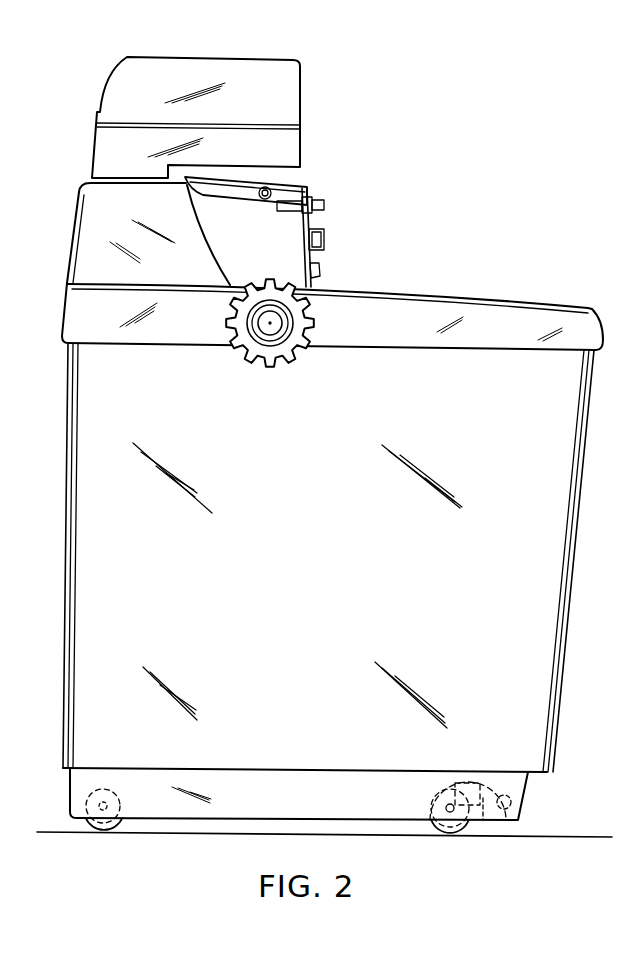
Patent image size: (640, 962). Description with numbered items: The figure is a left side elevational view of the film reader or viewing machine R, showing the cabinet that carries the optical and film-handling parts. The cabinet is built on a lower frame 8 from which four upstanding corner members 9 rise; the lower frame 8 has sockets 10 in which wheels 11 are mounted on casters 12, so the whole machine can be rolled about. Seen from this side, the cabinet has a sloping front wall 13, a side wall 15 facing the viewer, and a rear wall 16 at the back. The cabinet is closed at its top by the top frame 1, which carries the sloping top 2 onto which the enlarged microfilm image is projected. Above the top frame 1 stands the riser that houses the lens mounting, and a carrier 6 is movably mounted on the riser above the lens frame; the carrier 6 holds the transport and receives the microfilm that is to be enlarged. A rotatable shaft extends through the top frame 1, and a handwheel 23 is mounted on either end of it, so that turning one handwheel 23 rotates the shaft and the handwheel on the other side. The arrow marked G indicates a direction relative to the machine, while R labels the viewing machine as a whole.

The top frame 1 is at (385, 336).
The sloping top 2 is at (455, 297).
The carrier 6 is at (297, 183).
The lower frame 8 is at (308, 792).
The corner members 9 is at (67, 595).
The sockets 10 is at (527, 803).
The wheels 11 is at (452, 830).
The casters 12 is at (483, 834).
The sloping front wall 13 is at (573, 588).
The side wall 15 is at (350, 553).
The rear wall 16 is at (66, 522).
The handwheel 23 is at (270, 361).
The film reader or viewing machine R is at (418, 208).
The direction arrow G is at (61, 386).